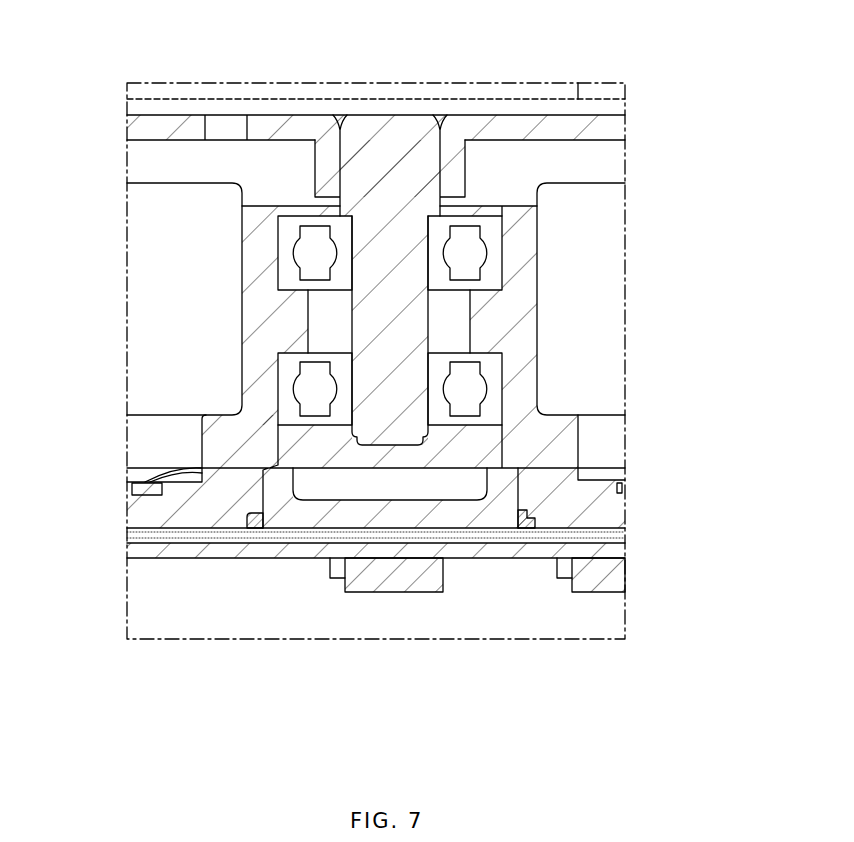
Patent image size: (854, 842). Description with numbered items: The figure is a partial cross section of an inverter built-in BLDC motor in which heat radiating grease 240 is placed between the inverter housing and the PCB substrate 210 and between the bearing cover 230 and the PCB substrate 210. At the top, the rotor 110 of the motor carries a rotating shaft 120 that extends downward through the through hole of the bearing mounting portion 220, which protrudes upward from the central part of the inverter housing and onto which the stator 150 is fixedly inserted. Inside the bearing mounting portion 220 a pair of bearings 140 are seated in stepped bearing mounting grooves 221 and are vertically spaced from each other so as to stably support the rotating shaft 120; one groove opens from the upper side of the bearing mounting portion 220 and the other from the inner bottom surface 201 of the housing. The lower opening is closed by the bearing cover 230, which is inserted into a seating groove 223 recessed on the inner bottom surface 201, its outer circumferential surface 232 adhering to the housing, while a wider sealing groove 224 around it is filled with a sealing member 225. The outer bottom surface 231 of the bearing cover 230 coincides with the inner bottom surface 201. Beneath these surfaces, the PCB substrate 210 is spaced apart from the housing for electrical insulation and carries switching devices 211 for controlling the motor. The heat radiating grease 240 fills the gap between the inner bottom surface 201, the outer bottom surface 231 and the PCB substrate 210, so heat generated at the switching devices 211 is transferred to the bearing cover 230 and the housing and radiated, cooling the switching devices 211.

The rotor 110 is at (553, 127).
The rotating shaft 120 is at (392, 150).
The bearing 140 is at (490, 227).
The stator 150 is at (603, 232).
The inner bottom surface 201 is at (162, 558).
The PCB substrate 210 is at (213, 552).
The switching devices 211 is at (385, 585).
The bearing mounting portion 220 is at (247, 312).
The bearing mounting groove 221 is at (513, 255).
The seating groove 223 is at (441, 481).
The sealing groove 224 is at (535, 518).
The sealing member 225 is at (252, 533).
The bearing cover 230 is at (493, 517).
The outer bottom surface 231 is at (300, 520).
The outer circumferential surface 232 is at (618, 488).
The heat radiating grease 240 is at (617, 535).